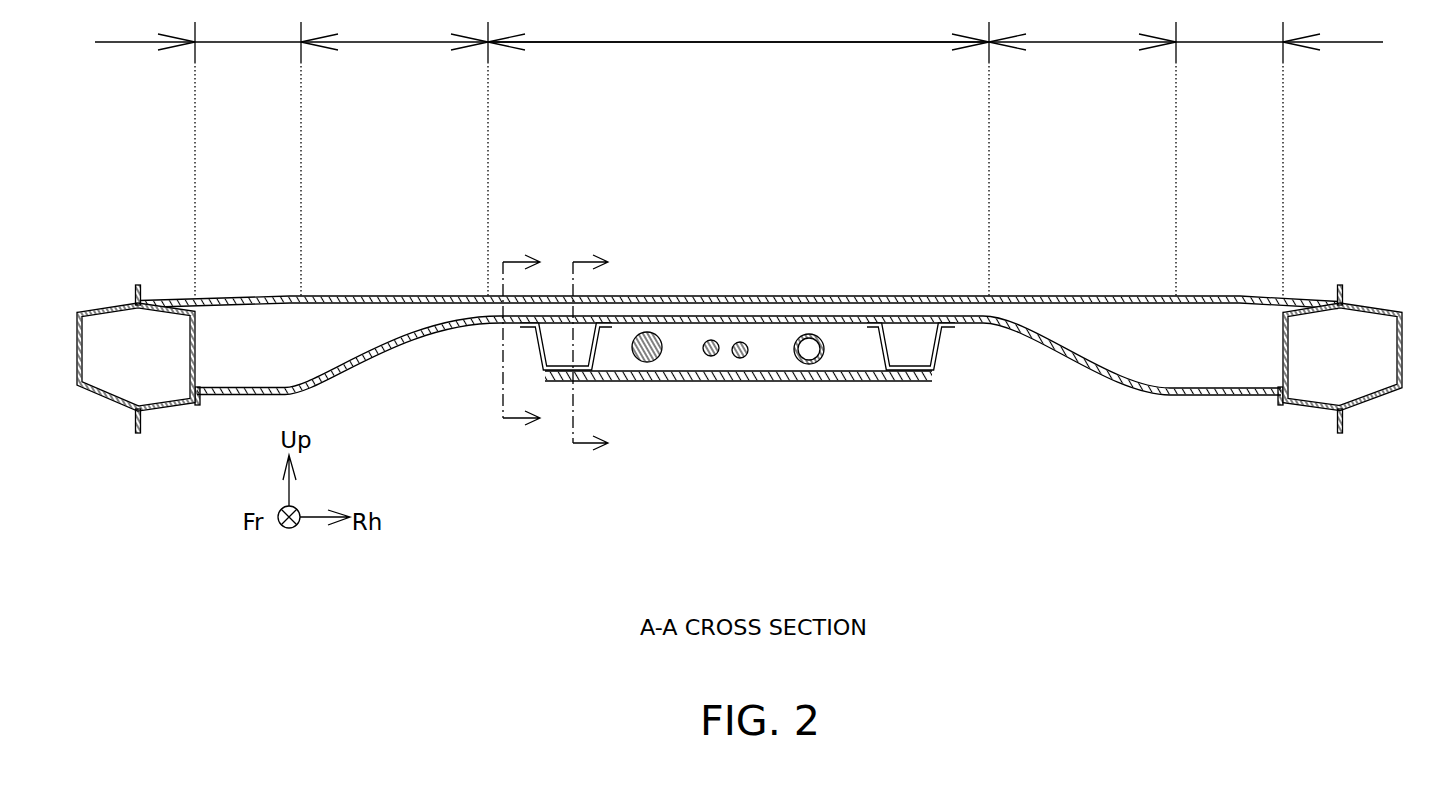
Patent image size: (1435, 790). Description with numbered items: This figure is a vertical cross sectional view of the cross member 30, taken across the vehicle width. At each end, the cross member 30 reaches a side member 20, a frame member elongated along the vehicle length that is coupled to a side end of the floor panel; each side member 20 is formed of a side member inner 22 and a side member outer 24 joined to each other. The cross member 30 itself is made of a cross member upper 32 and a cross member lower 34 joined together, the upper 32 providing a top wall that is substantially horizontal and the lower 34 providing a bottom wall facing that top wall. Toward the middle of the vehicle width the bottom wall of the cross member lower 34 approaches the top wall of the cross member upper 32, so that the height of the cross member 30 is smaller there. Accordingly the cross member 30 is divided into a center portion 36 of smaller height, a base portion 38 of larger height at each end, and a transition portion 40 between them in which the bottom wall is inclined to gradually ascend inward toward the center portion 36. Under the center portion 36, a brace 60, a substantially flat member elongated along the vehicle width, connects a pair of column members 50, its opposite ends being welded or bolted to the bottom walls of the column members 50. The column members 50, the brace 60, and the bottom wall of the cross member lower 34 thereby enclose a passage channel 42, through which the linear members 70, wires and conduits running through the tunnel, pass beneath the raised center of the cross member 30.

The side member 20 is at (742, 476).
The side member inner 22 is at (172, 405).
The side member outer 24 is at (92, 395).
The cross member 30 is at (739, 323).
The cross member upper 32 is at (782, 294).
The cross member lower 34 is at (1110, 370).
The center portion 36 is at (738, 27).
The base portion 38 is at (739, 154).
The transition portion 40 is at (731, 154).
The passage channel 42 is at (853, 353).
The column member 50 is at (597, 349).
The brace 60 is at (775, 424).
The linear member 70 is at (738, 358).